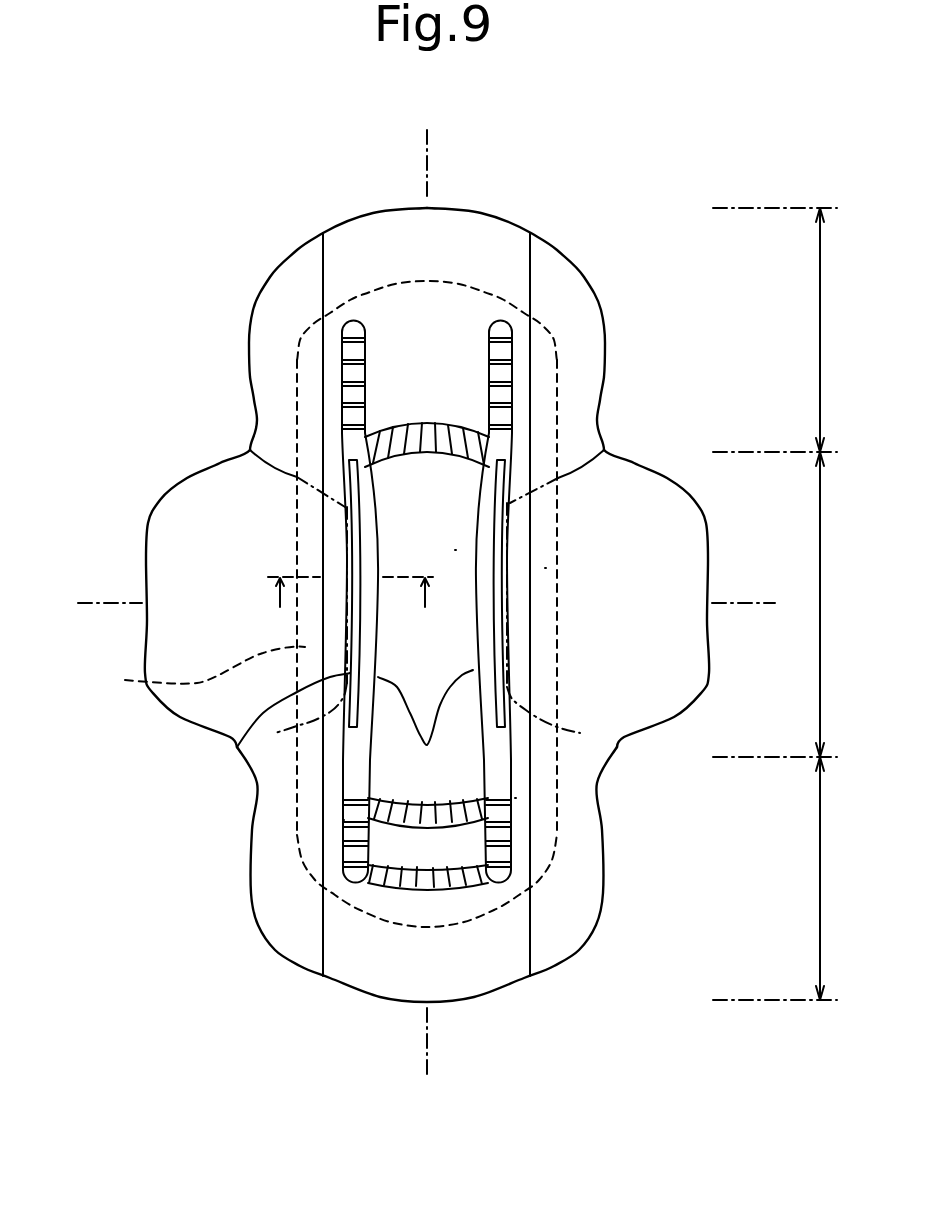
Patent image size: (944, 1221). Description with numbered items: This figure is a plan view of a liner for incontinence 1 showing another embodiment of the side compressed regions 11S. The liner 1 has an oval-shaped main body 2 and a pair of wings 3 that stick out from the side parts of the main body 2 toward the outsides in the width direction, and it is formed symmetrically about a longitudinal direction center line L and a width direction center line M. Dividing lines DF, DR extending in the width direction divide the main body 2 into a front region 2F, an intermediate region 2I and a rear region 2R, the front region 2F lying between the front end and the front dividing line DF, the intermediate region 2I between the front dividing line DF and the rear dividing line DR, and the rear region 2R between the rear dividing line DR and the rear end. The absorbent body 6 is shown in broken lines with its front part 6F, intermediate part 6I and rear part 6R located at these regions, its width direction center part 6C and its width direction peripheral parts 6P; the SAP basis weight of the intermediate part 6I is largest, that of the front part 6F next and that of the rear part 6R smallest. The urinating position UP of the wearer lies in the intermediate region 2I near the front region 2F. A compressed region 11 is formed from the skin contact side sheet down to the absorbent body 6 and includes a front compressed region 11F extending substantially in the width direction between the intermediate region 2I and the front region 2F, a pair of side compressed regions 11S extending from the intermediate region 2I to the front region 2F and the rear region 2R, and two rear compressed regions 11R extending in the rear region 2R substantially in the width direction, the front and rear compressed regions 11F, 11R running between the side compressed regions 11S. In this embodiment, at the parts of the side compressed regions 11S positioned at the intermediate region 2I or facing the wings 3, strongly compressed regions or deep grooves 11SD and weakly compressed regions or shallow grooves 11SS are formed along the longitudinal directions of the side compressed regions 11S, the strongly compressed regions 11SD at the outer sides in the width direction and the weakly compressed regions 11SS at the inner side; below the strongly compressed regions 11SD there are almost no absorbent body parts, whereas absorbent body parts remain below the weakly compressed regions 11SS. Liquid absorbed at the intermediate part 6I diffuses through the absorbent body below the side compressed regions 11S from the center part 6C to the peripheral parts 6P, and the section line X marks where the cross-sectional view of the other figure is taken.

The liner for incontinence 1 is at (457, 559).
The main body 2 is at (503, 213).
The wings 3 is at (183, 478).
The absorbent body 6 is at (321, 546).
The front part 6F is at (343, 303).
The rear part 6R is at (308, 813).
The intermediate part 6I is at (195, 668).
The width direction center part 6C is at (455, 550).
The width direction peripheral parts 6P is at (545, 568).
The compressed region 11 is at (419, 682).
The front compressed region 11F is at (387, 427).
The rear compressed regions 11R is at (445, 891).
The side compressed regions 11S is at (343, 820).
The strongly compressed regions 11SD is at (282, 732).
The weakly compressed regions 11SS is at (425, 724).
The front region 2F is at (782, 330).
The intermediate region 2I is at (781, 604).
The rear region 2R is at (784, 878).
The front dividing line DF is at (745, 450).
The rear dividing line DR is at (767, 759).
The longitudinal direction center line L is at (426, 604).
The width direction center line M is at (425, 603).
The line X- X is at (351, 607).
The urinating position UP is at (95, 517).